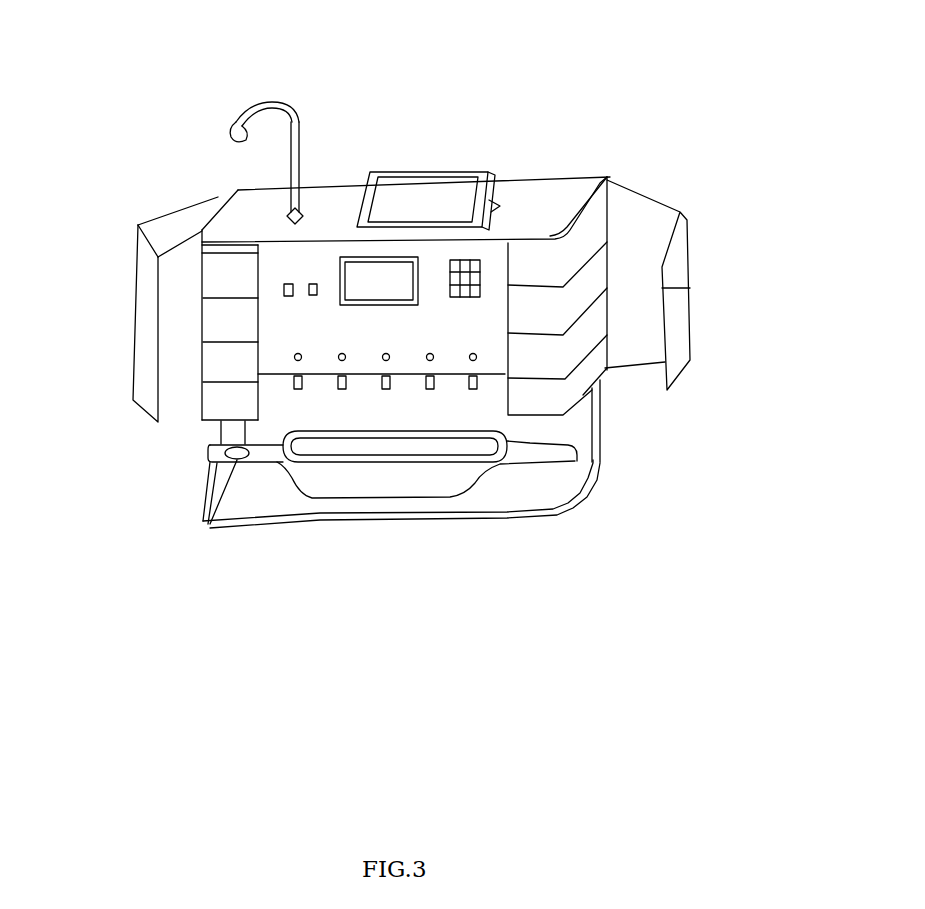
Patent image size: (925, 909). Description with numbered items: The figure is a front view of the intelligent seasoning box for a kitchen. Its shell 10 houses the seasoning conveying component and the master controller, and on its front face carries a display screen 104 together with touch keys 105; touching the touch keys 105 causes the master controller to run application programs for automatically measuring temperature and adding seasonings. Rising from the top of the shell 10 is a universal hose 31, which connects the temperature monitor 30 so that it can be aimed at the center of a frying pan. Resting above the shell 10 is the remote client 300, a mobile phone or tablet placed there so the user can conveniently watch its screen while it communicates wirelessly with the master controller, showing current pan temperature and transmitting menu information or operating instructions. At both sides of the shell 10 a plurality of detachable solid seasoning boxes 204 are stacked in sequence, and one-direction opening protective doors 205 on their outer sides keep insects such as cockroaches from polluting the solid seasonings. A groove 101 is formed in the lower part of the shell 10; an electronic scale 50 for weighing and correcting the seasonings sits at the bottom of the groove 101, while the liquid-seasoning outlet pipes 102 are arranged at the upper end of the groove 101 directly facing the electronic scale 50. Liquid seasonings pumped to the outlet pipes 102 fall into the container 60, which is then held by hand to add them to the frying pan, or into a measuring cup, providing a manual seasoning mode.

The shell 10 is at (533, 197).
The temperature monitor 30 is at (230, 125).
The universal hose 31 is at (296, 122).
The electronic scale 50 is at (508, 490).
The container 60 is at (372, 481).
The groove 101 is at (249, 478).
The liquid-seasoning outlet pipes 102 is at (383, 386).
The display screen 104 is at (376, 276).
The touch keys 105 is at (470, 276).
The solid seasoning boxes 204 is at (550, 370).
The one-direction opening protective doors 205 is at (641, 240).
The remote client 300 is at (455, 188).